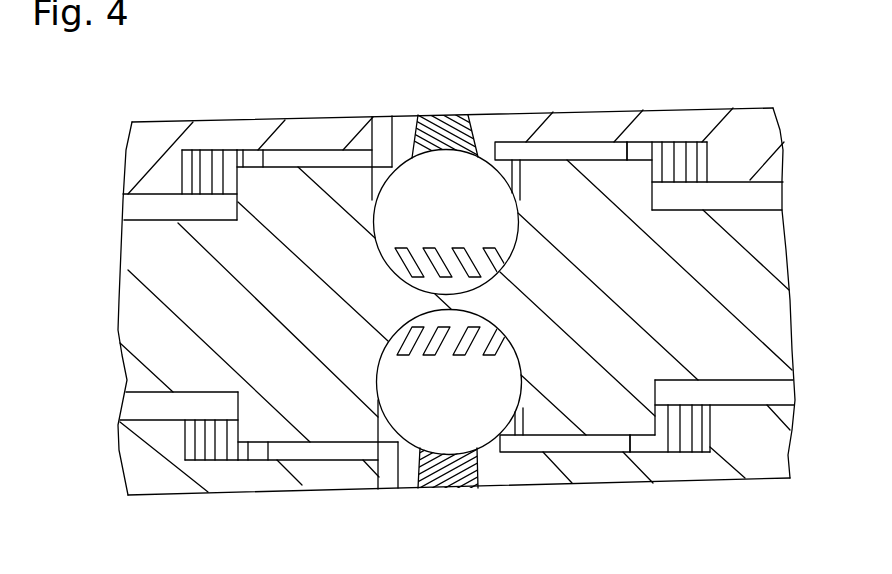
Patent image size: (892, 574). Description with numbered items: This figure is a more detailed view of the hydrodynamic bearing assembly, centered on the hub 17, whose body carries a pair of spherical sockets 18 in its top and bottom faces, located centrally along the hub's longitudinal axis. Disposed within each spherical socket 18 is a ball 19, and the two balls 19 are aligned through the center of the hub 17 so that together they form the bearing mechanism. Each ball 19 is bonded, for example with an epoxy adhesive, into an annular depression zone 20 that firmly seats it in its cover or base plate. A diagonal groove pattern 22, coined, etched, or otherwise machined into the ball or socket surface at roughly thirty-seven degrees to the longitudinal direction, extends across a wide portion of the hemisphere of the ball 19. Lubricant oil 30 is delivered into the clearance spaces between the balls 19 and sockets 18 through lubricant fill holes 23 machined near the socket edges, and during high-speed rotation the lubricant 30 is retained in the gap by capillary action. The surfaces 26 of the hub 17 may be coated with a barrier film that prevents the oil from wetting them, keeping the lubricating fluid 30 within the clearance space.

The hub 17 is at (456, 301).
The spherical socket 18 is at (564, 299).
The ball 19 is at (448, 302).
The annular depression zone 20 is at (455, 299).
The groove pattern 22 is at (312, 309).
The lubricant fill hole 23 is at (345, 308).
The surfaces of hub 26 is at (595, 299).
The lubricant oil 30 is at (518, 362).